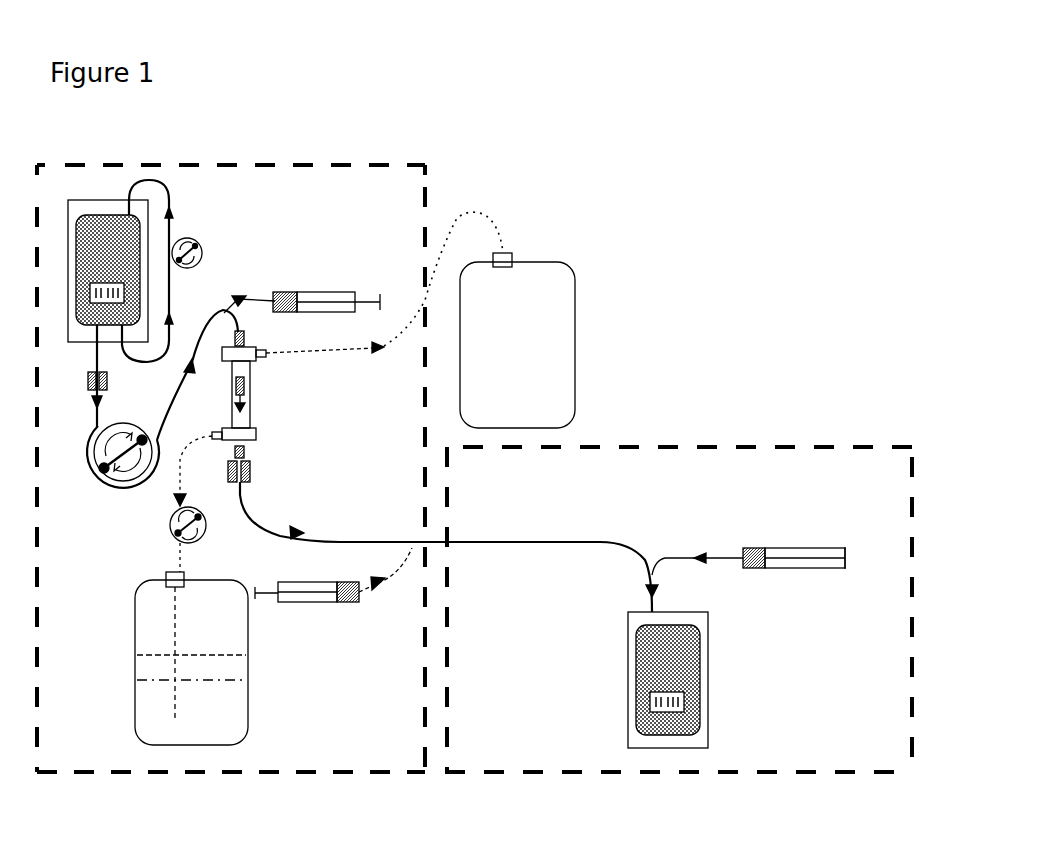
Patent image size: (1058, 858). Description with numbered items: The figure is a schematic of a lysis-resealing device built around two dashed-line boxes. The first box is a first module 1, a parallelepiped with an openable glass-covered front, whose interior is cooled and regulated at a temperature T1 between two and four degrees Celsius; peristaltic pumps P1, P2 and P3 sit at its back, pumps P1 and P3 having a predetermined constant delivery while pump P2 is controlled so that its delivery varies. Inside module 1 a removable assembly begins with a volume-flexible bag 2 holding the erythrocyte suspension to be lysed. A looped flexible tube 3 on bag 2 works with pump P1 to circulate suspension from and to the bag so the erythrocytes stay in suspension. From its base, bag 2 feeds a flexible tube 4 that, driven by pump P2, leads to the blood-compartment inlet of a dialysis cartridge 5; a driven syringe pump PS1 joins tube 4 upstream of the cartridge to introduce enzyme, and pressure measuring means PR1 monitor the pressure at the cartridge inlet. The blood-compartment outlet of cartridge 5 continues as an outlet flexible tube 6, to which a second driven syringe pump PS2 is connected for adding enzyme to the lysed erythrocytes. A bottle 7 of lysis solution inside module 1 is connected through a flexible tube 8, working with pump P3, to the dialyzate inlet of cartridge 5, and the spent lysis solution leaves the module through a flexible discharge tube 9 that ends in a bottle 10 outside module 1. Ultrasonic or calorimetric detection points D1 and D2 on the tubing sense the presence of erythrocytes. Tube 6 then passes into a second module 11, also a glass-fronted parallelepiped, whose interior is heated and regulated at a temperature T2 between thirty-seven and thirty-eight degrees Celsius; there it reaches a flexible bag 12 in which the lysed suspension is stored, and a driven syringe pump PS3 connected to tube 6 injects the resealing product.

The first module 1 is at (412, 192).
The bag 2 is at (98, 225).
The flexible tube 3 is at (172, 186).
The flexible tube 4 is at (105, 412).
The dialysis cartridge 5 is at (250, 395).
The outlet flexible tube 6 is at (363, 540).
The bottle 7 is at (218, 706).
The flexible tube 8 is at (177, 558).
The flexible discharge tube 9 is at (347, 352).
The bottle 10 is at (532, 367).
The second module 11 is at (490, 750).
The flexible bag 12 is at (685, 658).
The peristaltic pump P1 is at (201, 253).
The peristaltic pump P2 is at (109, 462).
The peristaltic pump P3 is at (176, 489).
The erythrocyte detection point D1 is at (78, 381).
The erythrocyte detection point D2 is at (255, 465).
The pressure measuring means PR1 is at (223, 375).
The driven syringe pump PS1 is at (302, 282).
The driven syringe pump PS2 is at (333, 587).
The driven syringe pump PS3 is at (748, 549).
The temperature inside first module T1 is at (332, 191).
The temperature inside second module T2 is at (823, 470).